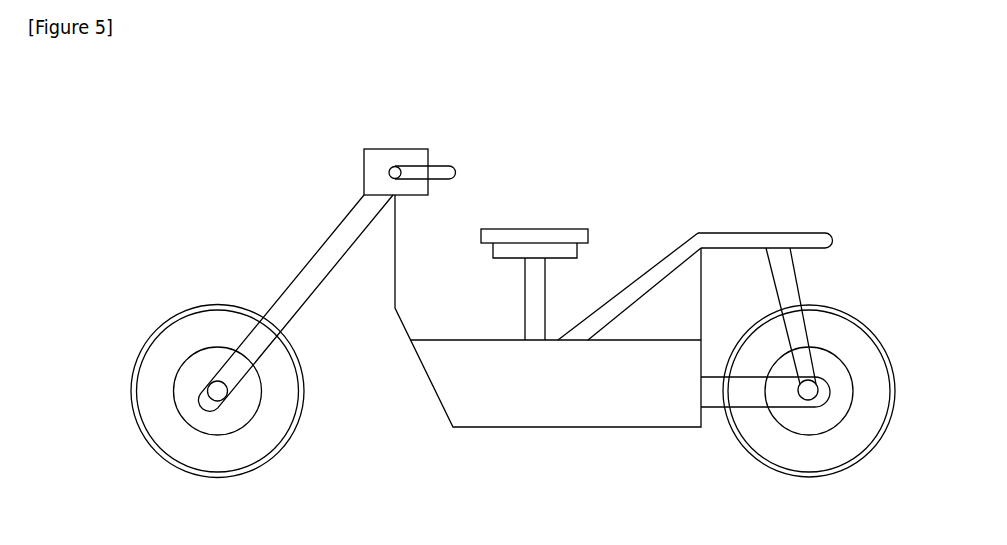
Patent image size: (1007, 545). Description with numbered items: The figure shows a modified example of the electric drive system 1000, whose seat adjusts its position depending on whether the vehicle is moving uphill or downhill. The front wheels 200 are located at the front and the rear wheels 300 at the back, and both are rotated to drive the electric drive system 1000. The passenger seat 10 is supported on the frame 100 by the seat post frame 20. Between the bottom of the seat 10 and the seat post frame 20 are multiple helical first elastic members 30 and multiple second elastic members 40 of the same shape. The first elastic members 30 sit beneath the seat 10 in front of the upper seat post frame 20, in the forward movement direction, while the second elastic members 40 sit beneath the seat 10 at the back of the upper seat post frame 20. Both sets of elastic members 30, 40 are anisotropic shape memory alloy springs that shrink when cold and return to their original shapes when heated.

The electric drive system 1000 is at (217, 108).
The passenger seat 10 is at (564, 235).
The seat post frame 20 is at (533, 297).
The first elastic members 30 is at (498, 250).
The second elastic members 40 is at (573, 252).
The frame 100 is at (312, 277).
The front wheels 200 is at (193, 333).
The rear wheels 300 is at (847, 338).